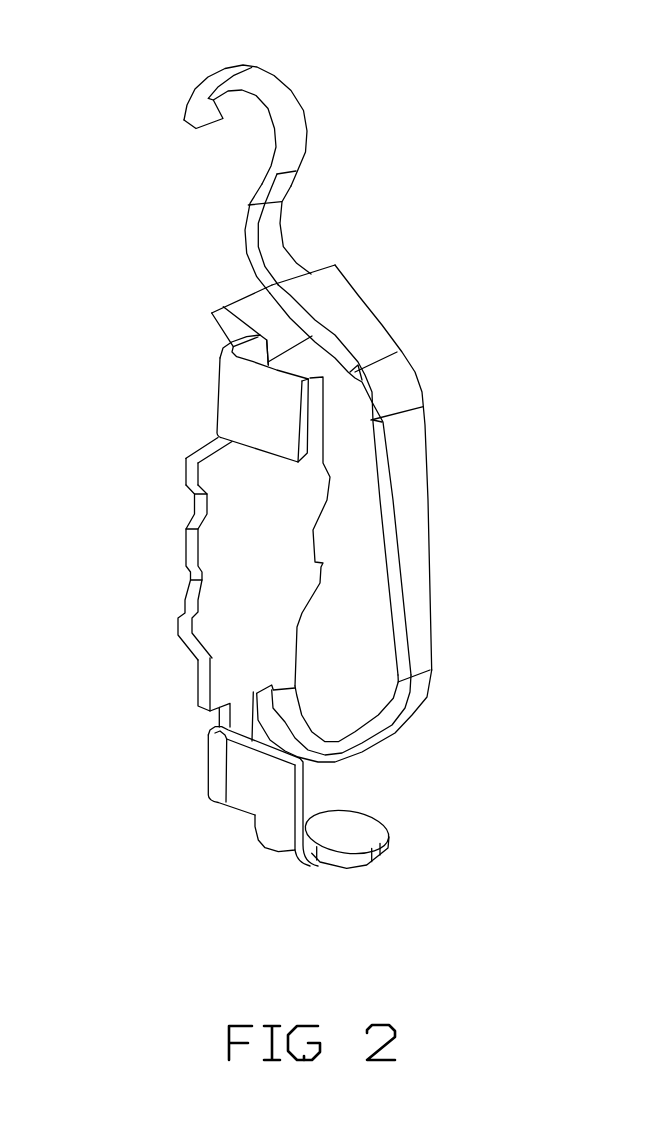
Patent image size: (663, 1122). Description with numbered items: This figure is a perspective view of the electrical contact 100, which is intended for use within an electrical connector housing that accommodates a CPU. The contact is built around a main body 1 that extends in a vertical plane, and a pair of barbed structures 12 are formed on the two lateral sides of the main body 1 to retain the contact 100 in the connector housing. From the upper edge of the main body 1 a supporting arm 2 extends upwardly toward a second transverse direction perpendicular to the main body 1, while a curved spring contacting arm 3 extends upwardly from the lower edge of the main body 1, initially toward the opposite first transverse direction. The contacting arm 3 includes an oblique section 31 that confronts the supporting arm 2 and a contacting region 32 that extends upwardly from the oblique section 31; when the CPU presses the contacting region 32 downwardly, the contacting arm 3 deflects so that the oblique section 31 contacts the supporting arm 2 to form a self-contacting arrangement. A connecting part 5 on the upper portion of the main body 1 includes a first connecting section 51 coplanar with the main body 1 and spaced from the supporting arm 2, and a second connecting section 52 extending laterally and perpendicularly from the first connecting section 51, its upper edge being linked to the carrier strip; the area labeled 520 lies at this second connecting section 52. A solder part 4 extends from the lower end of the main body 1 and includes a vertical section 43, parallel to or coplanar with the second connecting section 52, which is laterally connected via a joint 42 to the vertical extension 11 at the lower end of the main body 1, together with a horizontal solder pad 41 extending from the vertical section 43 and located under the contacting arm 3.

The electrical contact 100 is at (183, 60).
The main body 1 is at (237, 547).
The vertical extension 11 is at (243, 720).
The barbed structures 12 is at (188, 548).
The supporting arm 2 is at (260, 297).
The contacting arm 3 is at (407, 492).
The oblique section 31 is at (273, 238).
The contacting region 32 is at (270, 95).
The solder part 4 is at (277, 841).
The horizontal solder pad 41 is at (347, 832).
The joint 42 is at (217, 762).
The vertical section 43 is at (250, 788).
The connecting part 5 is at (283, 417).
The first connecting section 51 is at (235, 343).
The second connecting section 52 is at (248, 398).
The slot 520 is at (278, 366).